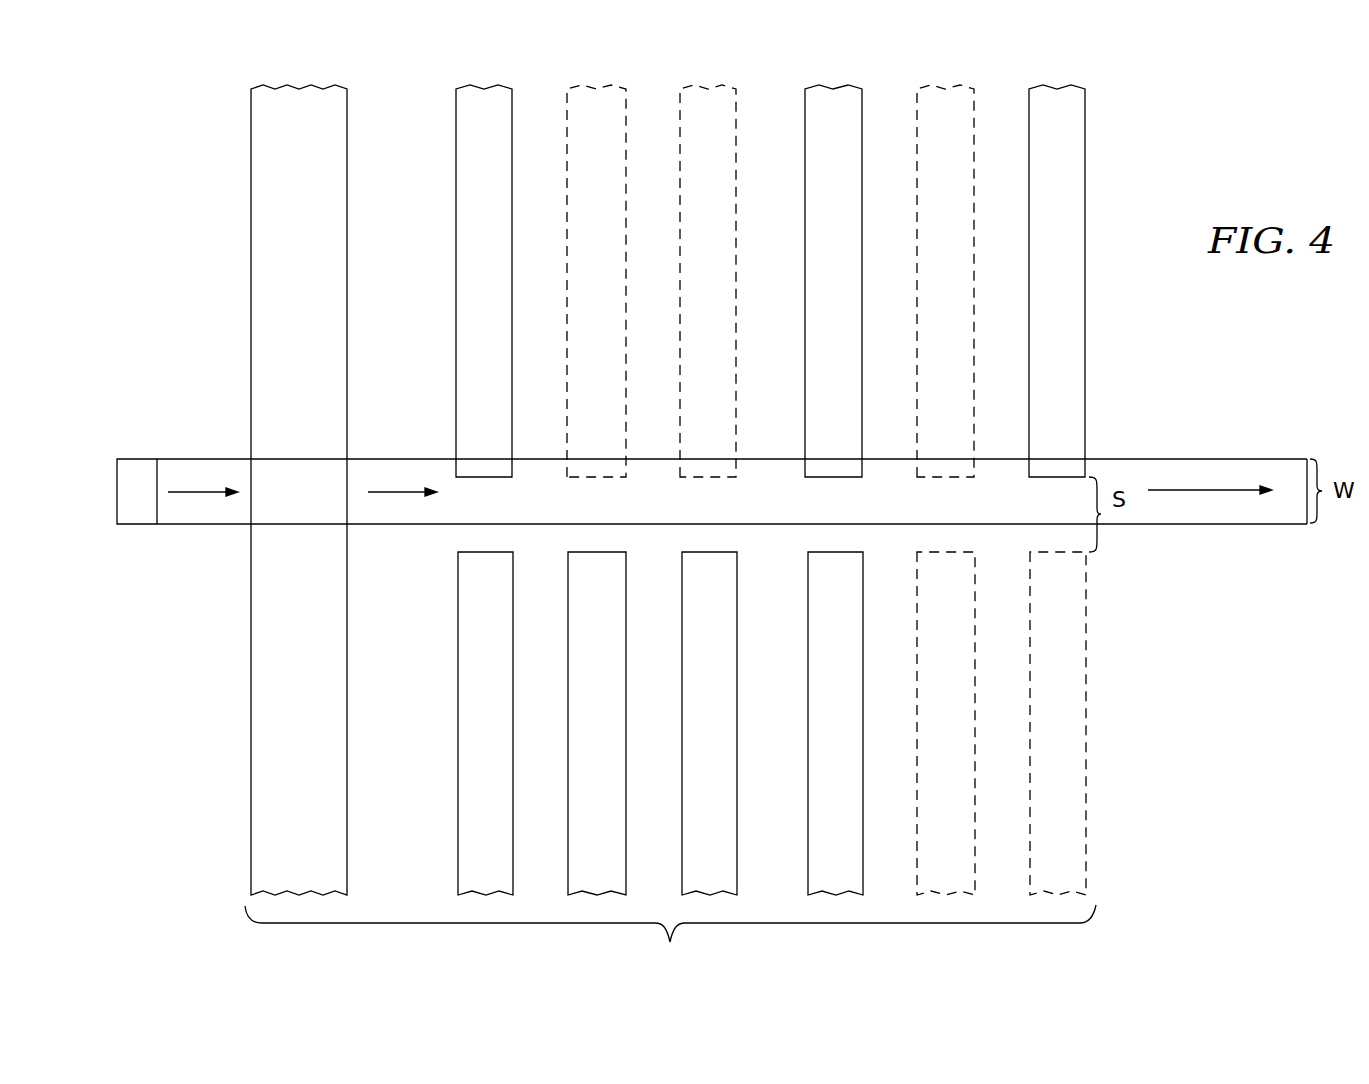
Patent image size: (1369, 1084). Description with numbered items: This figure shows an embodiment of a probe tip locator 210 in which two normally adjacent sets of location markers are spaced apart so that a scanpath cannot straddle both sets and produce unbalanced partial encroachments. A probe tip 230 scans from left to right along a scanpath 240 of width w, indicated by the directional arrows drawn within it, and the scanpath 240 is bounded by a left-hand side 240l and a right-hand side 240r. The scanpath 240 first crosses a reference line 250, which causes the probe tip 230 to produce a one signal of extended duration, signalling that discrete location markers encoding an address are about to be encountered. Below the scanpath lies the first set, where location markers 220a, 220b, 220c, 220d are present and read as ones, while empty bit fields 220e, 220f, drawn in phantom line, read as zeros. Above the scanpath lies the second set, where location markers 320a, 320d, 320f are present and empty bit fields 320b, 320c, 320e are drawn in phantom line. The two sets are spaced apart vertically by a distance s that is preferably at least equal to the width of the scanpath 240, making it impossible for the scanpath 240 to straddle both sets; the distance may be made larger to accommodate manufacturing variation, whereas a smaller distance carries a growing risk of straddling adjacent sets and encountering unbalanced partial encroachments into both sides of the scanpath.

The probe tip locator 210 is at (670, 939).
The location marker 220a is at (506, 773).
The location marker 220b is at (617, 773).
The location marker 220c is at (730, 773).
The location marker 220d is at (856, 773).
The empty bit field 220e is at (966, 773).
The empty bit field 220f is at (1078, 773).
The probe tip 230 is at (151, 502).
The scanpath 240 is at (785, 502).
The left-hand side of the scanpath 240l is at (1195, 459).
The right-hand side of the scanpath 240r is at (1195, 524).
The reference line 250 is at (313, 773).
The location marker 320a is at (505, 357).
The empty bit field 320b is at (616, 357).
The empty bit field 320c is at (728, 357).
The location marker 320d is at (853, 357).
The empty bit field 320e is at (965, 357).
The location marker 320f is at (1077, 357).